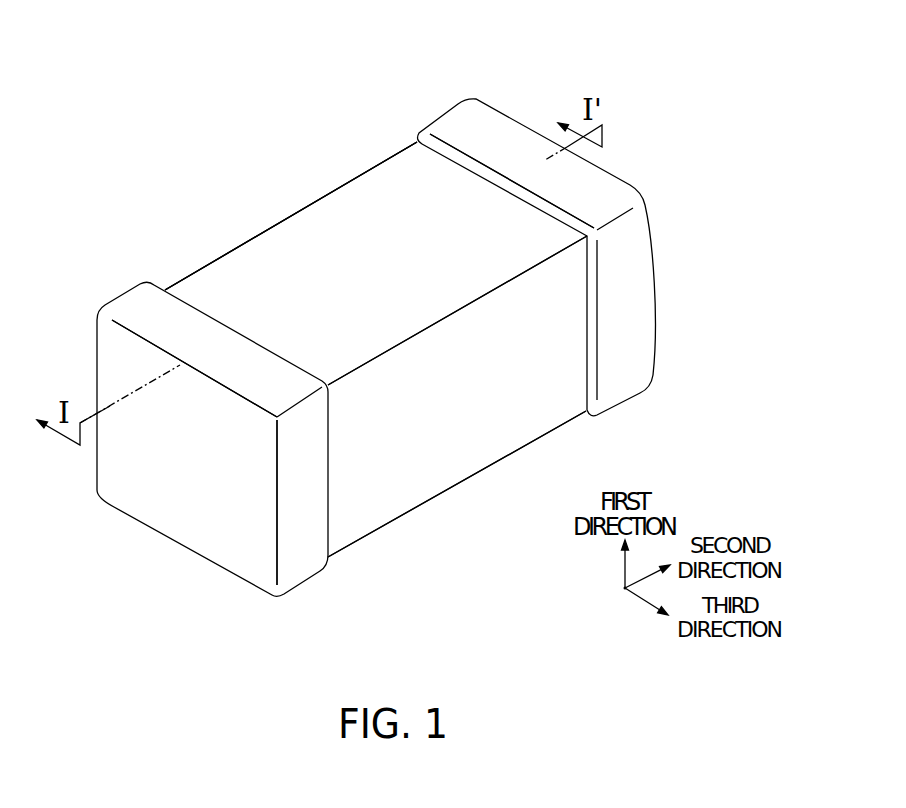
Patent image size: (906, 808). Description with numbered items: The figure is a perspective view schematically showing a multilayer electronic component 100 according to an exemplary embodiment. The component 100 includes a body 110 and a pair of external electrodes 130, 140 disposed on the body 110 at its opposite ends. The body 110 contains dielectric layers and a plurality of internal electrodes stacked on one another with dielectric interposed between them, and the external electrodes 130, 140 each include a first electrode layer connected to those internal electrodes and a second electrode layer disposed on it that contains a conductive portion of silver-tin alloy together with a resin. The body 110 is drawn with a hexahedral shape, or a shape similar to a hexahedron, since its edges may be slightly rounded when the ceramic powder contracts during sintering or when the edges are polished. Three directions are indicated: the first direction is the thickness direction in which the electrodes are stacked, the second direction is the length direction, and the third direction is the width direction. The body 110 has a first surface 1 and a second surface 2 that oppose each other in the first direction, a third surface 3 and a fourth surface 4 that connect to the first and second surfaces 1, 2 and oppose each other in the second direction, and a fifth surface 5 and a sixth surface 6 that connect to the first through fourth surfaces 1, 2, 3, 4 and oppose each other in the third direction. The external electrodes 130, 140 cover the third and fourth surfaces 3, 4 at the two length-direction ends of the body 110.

The multilayer electronic component 100 is at (376, 300).
The body 110 is at (340, 205).
The external electrode 130 is at (142, 301).
The external electrode 140 is at (457, 123).
The first surface 1 is at (410, 517).
The second surface 2 is at (413, 200).
The third surface 3 is at (183, 505).
The fourth surface 4 is at (506, 135).
The fifth surface 5 is at (450, 450).
The sixth surface 6 is at (215, 245).